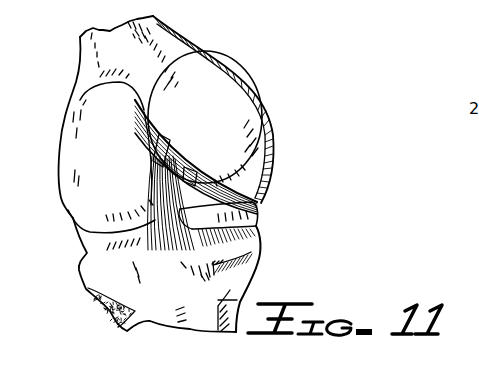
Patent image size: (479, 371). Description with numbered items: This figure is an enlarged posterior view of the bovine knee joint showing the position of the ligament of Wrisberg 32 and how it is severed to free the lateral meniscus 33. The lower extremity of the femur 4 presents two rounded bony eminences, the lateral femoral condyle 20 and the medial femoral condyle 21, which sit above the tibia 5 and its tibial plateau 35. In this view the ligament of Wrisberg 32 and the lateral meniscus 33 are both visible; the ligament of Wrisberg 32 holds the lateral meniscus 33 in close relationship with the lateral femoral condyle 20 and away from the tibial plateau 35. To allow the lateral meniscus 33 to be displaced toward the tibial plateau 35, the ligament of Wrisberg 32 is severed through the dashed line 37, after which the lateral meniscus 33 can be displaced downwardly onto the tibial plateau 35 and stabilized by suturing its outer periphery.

The femur 4 is at (85, 51).
The lateral femoral condyle 20 is at (233, 100).
The medial femoral condyle 21 is at (92, 197).
The ligament of Wrisberg 32 is at (197, 177).
The dashed line 37 is at (163, 139).
The lateral meniscus 33 is at (262, 220).
The tibial plateau 35 is at (257, 245).
The tibia 5 is at (243, 294).